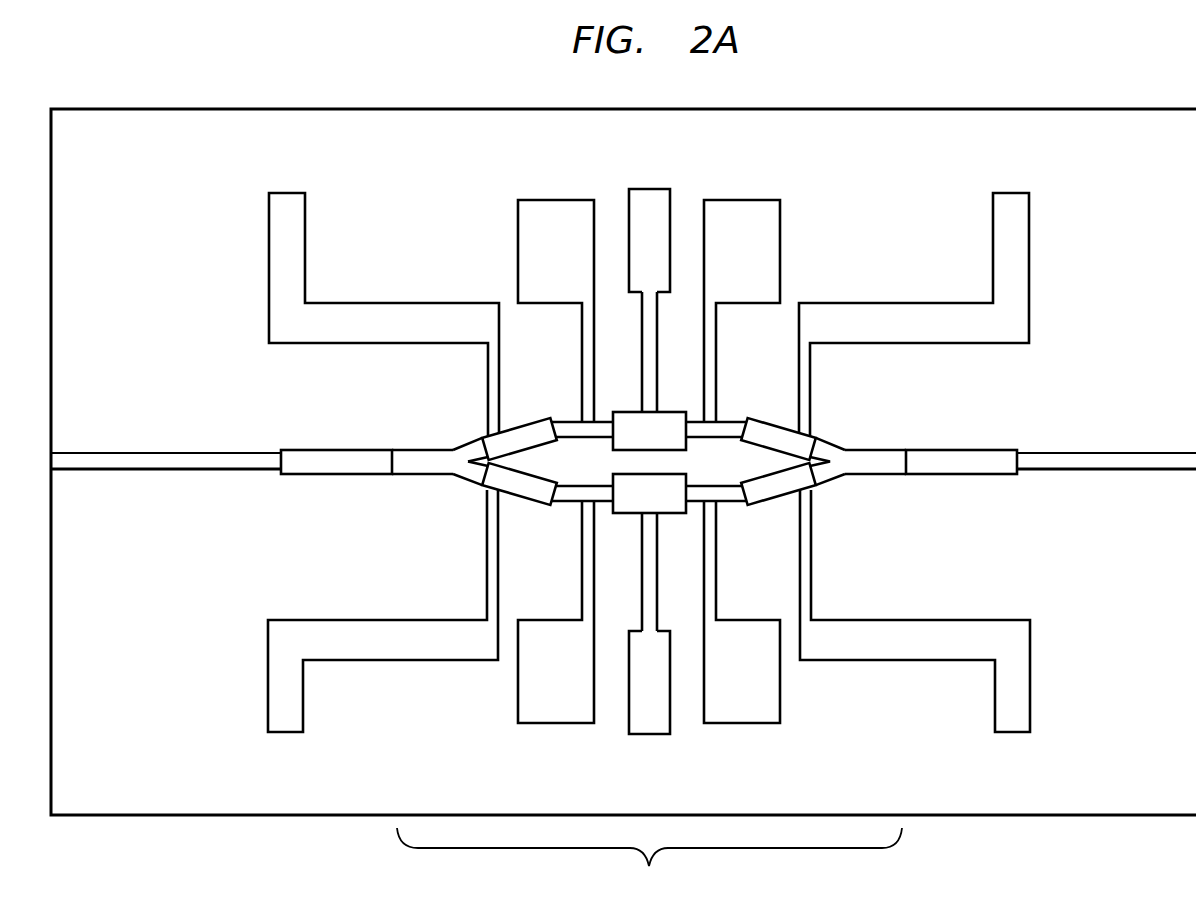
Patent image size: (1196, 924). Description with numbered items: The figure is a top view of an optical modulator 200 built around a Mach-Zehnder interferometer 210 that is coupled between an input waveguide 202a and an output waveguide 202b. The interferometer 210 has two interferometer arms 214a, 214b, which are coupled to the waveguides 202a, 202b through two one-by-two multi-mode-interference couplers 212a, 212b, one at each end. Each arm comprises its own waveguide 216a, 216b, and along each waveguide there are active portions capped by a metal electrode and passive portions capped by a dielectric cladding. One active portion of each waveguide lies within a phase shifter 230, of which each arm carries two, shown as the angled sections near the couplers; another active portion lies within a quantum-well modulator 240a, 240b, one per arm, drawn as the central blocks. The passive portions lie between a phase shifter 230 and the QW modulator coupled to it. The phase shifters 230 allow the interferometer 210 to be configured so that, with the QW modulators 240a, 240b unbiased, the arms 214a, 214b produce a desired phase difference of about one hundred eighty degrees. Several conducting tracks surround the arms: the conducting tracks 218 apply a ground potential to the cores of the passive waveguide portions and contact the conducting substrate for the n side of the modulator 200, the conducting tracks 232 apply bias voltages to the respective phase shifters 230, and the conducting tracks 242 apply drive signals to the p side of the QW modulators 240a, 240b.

The optical modulator 200 is at (77, 157).
The waveguide 202a is at (128, 471).
The waveguide 202b is at (1122, 471).
The Mach-Zehnder interferometer 210 is at (649, 867).
The 1×2 multi-mode-interference coupler 212a is at (330, 476).
The 1×2 multi-mode-interference coupler 212b is at (960, 476).
The interferometer arm 214a is at (468, 423).
The interferometer arm 214b is at (468, 506).
The waveguide 216a is at (728, 419).
The waveguide 216b is at (563, 506).
The conducting track 218 is at (562, 200).
The phase shifter 230 is at (530, 419).
The conducting track 232 is at (400, 303).
The quantum-well modulator 240a is at (668, 411).
The quantum-well modulator 240b is at (625, 514).
The conducting track 242 is at (652, 189).